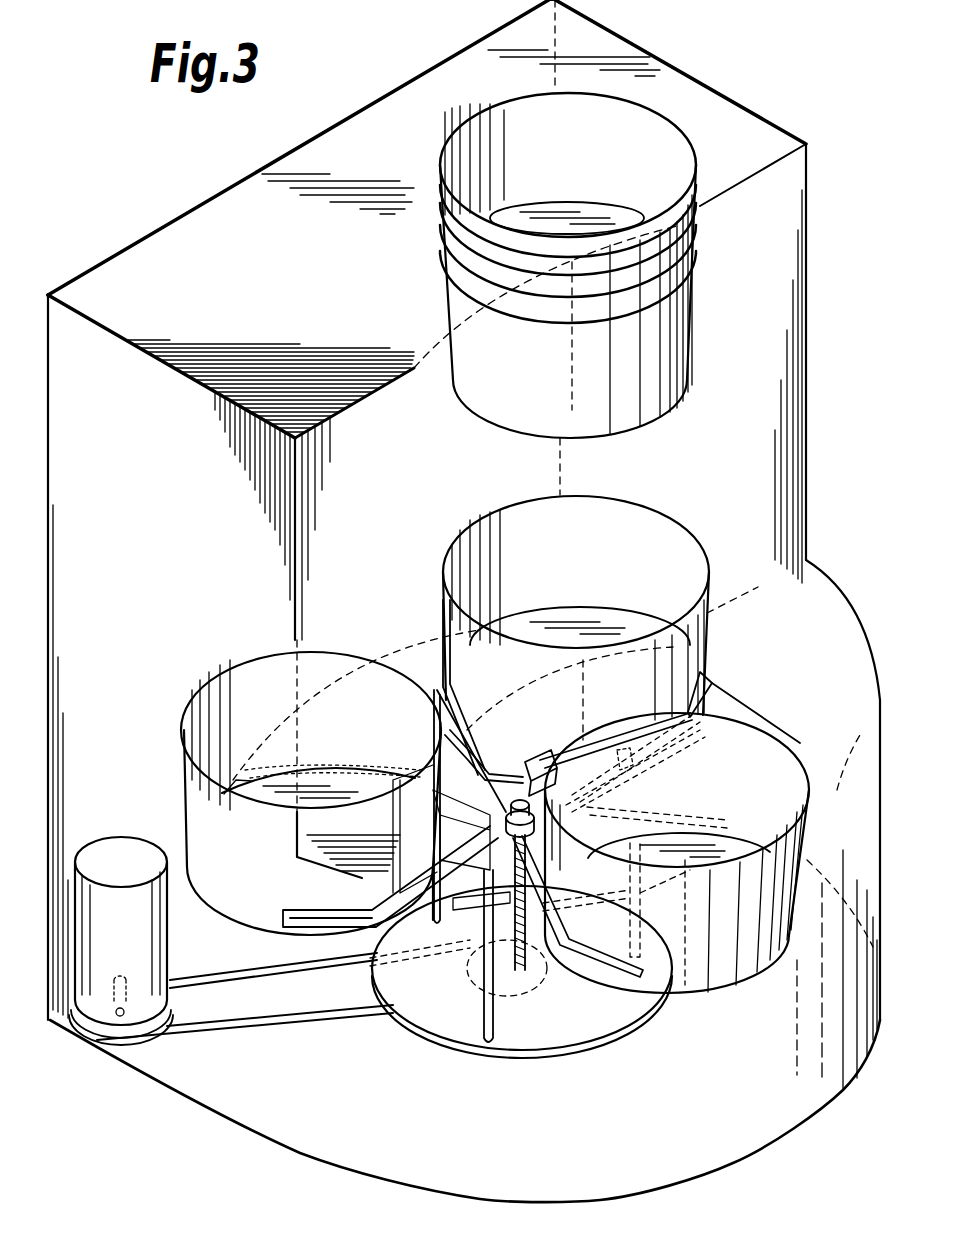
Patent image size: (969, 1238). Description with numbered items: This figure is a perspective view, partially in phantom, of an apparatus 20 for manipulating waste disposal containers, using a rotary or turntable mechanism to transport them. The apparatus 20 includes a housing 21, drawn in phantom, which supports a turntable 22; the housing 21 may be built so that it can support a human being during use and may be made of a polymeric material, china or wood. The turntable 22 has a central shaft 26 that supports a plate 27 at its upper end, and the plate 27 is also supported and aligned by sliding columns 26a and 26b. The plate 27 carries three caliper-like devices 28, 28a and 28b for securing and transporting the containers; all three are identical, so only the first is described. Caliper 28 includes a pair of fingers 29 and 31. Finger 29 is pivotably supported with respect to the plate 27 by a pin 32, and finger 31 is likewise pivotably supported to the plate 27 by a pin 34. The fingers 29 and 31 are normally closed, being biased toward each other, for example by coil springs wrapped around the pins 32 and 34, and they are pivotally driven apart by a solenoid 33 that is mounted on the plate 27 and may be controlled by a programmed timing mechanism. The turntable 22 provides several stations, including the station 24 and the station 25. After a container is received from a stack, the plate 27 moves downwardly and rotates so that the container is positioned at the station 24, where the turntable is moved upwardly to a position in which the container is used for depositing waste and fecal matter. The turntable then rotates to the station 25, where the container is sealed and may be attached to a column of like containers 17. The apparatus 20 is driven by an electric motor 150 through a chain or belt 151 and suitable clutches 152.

The apparatus 20 is at (464, 601).
The housing 21 is at (168, 239).
The column of like containers 17 is at (697, 229).
The turntable 22 is at (398, 580).
The station 24 is at (763, 752).
The station 25 is at (250, 682).
The central shaft 26 is at (536, 988).
The sliding column 26a is at (493, 1040).
The sliding column 26b is at (628, 930).
The plate 27 is at (477, 885).
The caliper-like device 28 is at (712, 683).
The caliper-like device 28a is at (657, 1000).
The caliper-like device 28b is at (314, 912).
The finger 29 is at (442, 672).
The finger 31 is at (664, 754).
The pin 32 is at (475, 748).
The solenoid 33 is at (540, 752).
The pin 34 is at (631, 768).
The electric motor 150 is at (112, 848).
The chain or belt 151 is at (243, 1027).
The clutches 152 is at (607, 1034).